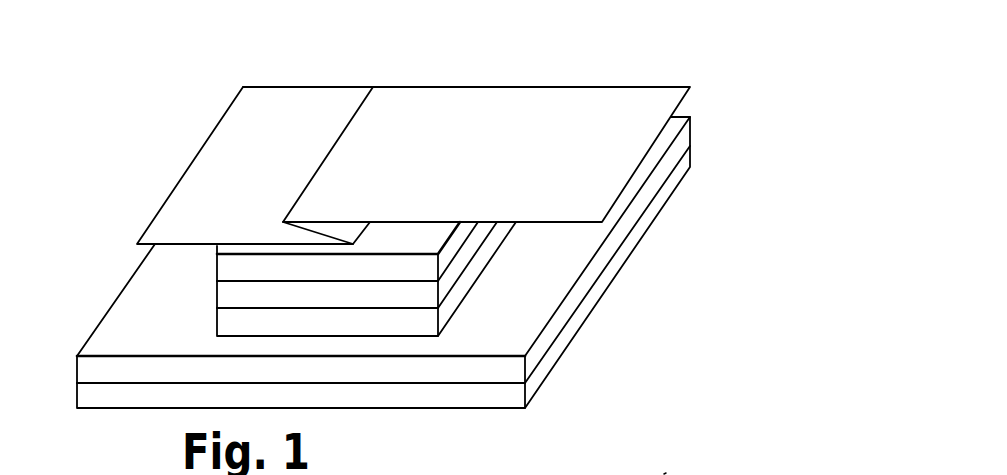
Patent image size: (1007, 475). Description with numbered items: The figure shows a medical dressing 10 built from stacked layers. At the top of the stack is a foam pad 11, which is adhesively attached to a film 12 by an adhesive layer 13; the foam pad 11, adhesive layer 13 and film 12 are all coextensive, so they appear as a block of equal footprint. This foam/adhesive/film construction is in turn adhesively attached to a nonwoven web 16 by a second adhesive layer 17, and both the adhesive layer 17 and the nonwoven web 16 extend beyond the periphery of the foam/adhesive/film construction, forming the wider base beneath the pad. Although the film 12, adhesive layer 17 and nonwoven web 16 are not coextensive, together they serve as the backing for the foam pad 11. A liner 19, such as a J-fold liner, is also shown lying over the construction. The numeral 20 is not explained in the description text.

The medical dressing 10 is at (360, 239).
The foam pad 11 is at (233, 267).
The film 12 is at (373, 322).
The adhesive layer 13 is at (403, 293).
The nonwoven web 16 is at (87, 393).
The adhesive layer 17 is at (83, 368).
The liner 19 is at (452, 115).
The adjacent element (partially shown) 20 is at (666, 473).